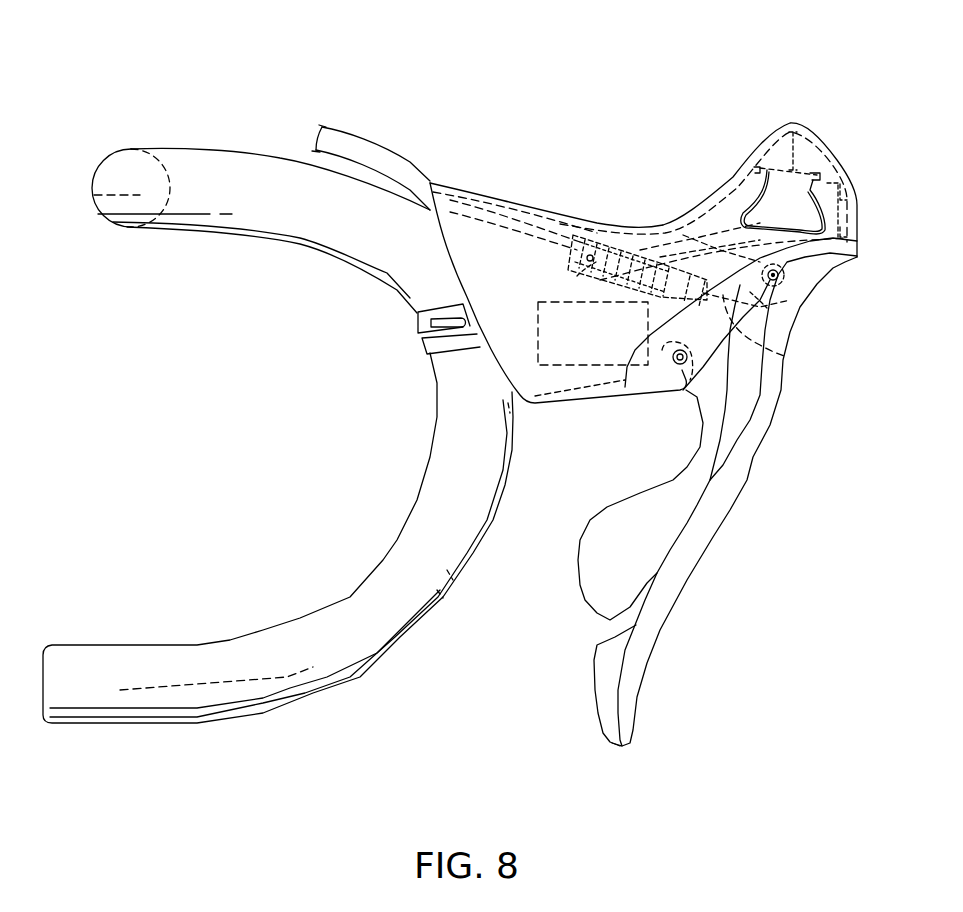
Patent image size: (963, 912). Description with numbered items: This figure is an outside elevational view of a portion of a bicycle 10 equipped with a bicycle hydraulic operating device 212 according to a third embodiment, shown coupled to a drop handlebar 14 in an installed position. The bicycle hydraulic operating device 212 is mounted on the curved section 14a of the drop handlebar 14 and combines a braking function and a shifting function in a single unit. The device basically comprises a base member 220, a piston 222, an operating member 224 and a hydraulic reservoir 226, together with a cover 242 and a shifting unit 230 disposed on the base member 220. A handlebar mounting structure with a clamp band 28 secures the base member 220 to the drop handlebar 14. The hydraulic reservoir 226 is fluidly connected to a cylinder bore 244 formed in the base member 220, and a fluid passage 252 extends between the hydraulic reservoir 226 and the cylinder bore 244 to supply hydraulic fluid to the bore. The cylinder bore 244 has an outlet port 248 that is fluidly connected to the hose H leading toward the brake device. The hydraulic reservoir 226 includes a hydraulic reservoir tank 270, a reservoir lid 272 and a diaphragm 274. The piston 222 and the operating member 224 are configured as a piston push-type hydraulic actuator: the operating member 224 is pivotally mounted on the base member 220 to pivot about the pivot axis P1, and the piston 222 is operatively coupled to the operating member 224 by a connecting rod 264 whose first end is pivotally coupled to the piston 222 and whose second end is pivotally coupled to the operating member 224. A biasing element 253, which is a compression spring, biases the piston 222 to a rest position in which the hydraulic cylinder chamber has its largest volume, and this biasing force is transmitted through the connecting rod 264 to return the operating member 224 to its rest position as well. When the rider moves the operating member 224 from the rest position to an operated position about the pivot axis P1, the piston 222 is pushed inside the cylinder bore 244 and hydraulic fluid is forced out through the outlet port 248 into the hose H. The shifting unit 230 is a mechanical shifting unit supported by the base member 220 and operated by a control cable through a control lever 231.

The bicycle 10 is at (118, 138).
The drop handlebar 14 is at (232, 148).
The curved section 14a is at (437, 392).
The hose H is at (381, 142).
The clamp band 28 is at (410, 327).
The bicycle hydraulic operating device 212 is at (795, 110).
The base member 220 is at (648, 392).
The piston 222 is at (632, 238).
The operating member 224 is at (752, 485).
The hydraulic reservoir 226 is at (720, 197).
The shifting unit 230 is at (556, 370).
The control lever 231 is at (575, 603).
The cover 242 is at (532, 217).
The cylinder bore 244 is at (593, 234).
The outlet port 248 is at (583, 259).
The fluid passage 252 is at (678, 234).
The biasing element 253 is at (577, 276).
The connecting rod 264 is at (787, 357).
The hydraulic reservoir tank 270 is at (717, 180).
The reservoir lid 272 is at (810, 152).
The diaphragm 274 is at (742, 178).
The pivot axis P1 is at (780, 282).